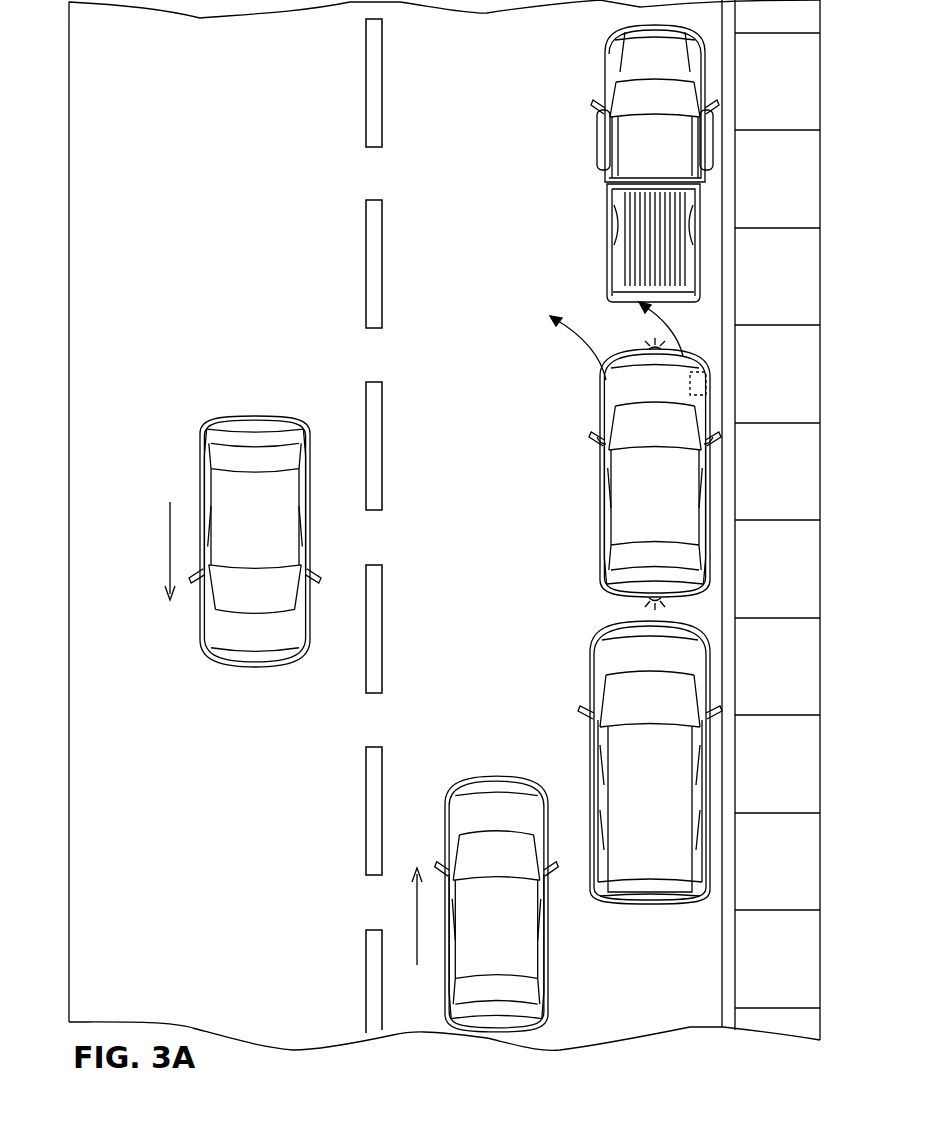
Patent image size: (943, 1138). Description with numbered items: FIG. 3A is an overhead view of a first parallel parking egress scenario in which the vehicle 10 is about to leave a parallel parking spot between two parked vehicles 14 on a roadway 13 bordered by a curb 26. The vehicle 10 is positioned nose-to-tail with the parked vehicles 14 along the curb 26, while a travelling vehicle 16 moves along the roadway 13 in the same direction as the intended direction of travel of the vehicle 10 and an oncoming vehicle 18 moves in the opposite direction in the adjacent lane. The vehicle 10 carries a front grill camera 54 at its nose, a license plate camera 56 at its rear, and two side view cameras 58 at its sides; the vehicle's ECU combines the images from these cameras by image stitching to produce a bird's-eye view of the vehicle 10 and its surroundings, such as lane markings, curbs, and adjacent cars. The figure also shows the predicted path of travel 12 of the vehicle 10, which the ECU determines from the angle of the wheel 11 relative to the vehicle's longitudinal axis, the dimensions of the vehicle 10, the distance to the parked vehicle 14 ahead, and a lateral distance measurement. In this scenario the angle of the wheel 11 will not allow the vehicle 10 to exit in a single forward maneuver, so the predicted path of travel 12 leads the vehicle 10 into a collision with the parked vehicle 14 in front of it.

The vehicle 10 is at (600, 487).
The wheel 11 is at (708, 390).
The predicted path of travel 12 is at (583, 345).
The roadway 13 is at (68, 347).
The parked vehicle 14 is at (606, 72).
The travelling vehicle 16 is at (500, 775).
The oncoming vehicle 18 is at (257, 415).
The curb 26 is at (726, 558).
The front grill camera 54 is at (653, 345).
The license plate camera 56 is at (650, 605).
The side view camera 58 is at (597, 440).